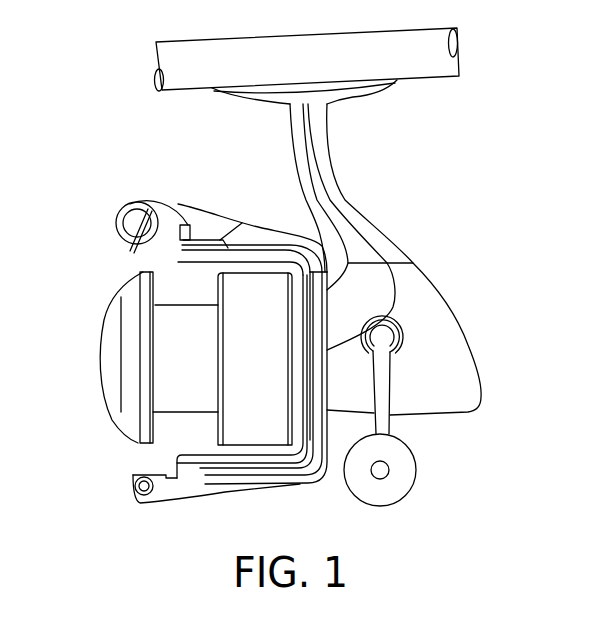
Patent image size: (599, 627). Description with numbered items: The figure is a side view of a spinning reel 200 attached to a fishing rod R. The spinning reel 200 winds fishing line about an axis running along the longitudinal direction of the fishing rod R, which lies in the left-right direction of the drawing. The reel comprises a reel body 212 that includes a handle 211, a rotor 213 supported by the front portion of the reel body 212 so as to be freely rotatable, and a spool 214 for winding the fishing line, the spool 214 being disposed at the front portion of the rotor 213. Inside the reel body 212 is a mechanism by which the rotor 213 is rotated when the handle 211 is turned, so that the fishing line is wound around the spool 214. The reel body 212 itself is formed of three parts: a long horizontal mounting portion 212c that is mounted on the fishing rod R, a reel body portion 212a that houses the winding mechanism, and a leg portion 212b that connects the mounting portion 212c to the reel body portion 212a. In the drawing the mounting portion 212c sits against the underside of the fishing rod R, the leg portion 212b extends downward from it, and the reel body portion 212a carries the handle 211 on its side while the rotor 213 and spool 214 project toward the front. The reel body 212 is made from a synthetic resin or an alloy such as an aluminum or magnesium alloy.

The fishing rod R is at (360, 31).
The spinning reel 200 is at (90, 191).
The handle 211 is at (392, 424).
The reel body 212 is at (372, 247).
The reel body portion 212a is at (447, 294).
The leg portion 212b is at (329, 172).
The mounting portion 212c is at (357, 97).
The rotor 213 is at (270, 487).
The spool 214 is at (190, 412).